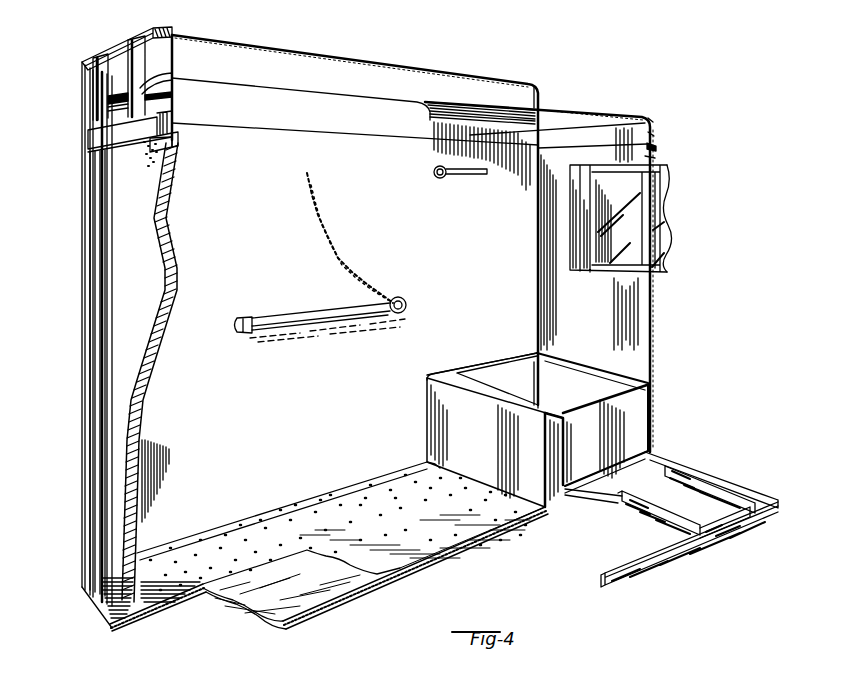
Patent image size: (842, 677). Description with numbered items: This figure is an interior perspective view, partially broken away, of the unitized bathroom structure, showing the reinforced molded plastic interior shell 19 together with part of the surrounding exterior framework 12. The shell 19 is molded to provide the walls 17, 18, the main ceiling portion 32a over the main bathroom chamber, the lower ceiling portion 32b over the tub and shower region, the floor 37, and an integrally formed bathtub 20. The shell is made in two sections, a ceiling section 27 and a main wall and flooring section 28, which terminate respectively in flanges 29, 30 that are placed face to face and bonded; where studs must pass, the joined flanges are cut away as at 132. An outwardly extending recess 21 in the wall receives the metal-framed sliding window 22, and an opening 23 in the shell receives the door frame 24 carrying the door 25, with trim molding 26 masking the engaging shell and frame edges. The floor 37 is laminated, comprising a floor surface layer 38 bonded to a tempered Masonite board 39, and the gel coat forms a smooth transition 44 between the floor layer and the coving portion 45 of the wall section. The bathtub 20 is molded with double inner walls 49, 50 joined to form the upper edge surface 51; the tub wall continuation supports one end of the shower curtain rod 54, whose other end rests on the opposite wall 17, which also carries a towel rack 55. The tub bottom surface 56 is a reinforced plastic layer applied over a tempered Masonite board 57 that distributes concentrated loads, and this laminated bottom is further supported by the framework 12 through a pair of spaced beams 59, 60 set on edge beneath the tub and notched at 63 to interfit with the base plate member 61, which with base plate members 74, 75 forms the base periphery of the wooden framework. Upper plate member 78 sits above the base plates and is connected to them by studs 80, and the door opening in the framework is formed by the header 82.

The exterior framework 12 is at (73, 370).
The wall 17 is at (355, 220).
The wall 18 is at (589, 252).
The interior shell 19 is at (660, 334).
The bathtub 20 is at (650, 419).
The recess 21 is at (579, 218).
The sliding window 22 is at (670, 231).
The opening 23 is at (172, 150).
The door frame 24 is at (100, 178).
The door 25 is at (179, 280).
The trim molding 26 is at (179, 138).
The ceiling section 27 is at (652, 124).
The main wall and flooring section 28 is at (654, 158).
The flange 29 is at (655, 140).
The flange 30 is at (657, 147).
The main ceiling portion 32a is at (355, 122).
The lower ceiling portion 32b is at (537, 269).
The floor 37 is at (329, 553).
The floor surface layer 38 is at (471, 538).
The Masonite board 39 is at (328, 588).
The transition 44 is at (350, 489).
The coving portion 45 is at (418, 466).
The inner wall 49 is at (567, 440).
The inner wall 50 is at (544, 453).
The upper edge surface 51 is at (493, 394).
The shower curtain rod 54 is at (464, 177).
The towel rack 55 is at (312, 317).
The bottom surface 56 is at (608, 448).
The Masonite board 57 is at (600, 484).
The beam 59 is at (741, 493).
The beam 60 is at (620, 504).
The base plate member 61 is at (637, 578).
The notch 63 is at (742, 520).
The base plate member 74 is at (90, 604).
The base plate member 75 is at (705, 474).
The upper plate member 78 is at (132, 40).
The stud 80 is at (125, 53).
The header 82 is at (173, 119).
The cut-away 132 is at (160, 77).